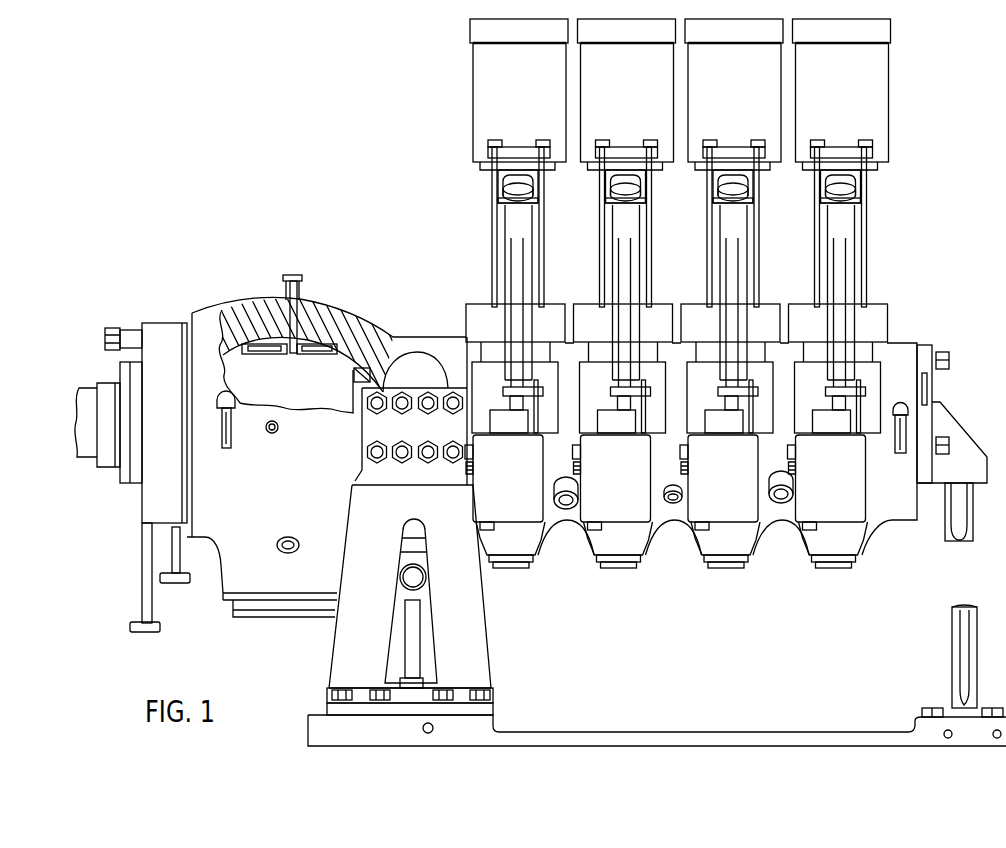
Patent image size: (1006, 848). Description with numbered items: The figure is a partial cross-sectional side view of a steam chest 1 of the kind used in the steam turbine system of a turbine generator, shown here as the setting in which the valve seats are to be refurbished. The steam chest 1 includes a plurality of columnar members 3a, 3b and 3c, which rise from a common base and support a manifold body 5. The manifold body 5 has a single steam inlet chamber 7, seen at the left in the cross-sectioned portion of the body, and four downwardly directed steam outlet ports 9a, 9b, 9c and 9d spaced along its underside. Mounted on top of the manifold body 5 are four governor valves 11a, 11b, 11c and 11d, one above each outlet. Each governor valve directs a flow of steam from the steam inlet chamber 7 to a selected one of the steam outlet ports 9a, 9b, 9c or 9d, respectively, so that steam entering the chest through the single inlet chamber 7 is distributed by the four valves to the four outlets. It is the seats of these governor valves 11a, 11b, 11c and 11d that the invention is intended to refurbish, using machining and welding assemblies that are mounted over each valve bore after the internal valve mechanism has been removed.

The steam chest 1 is at (288, 192).
The columnar member 3a is at (340, 657).
The columnar member 3b is at (492, 670).
The columnar member 3c is at (952, 660).
The manifold body 5 is at (625, 478).
The steam inlet chamber 7 is at (296, 388).
The steam outlet port 9a is at (508, 568).
The steam outlet port 9b is at (616, 568).
The steam outlet port 9c is at (724, 568).
The steam outlet port 9d is at (832, 568).
The governor valve 11a is at (529, 118).
The governor valve 11b is at (637, 118).
The governor valve 11c is at (748, 118).
The governor valve 11d is at (855, 118).